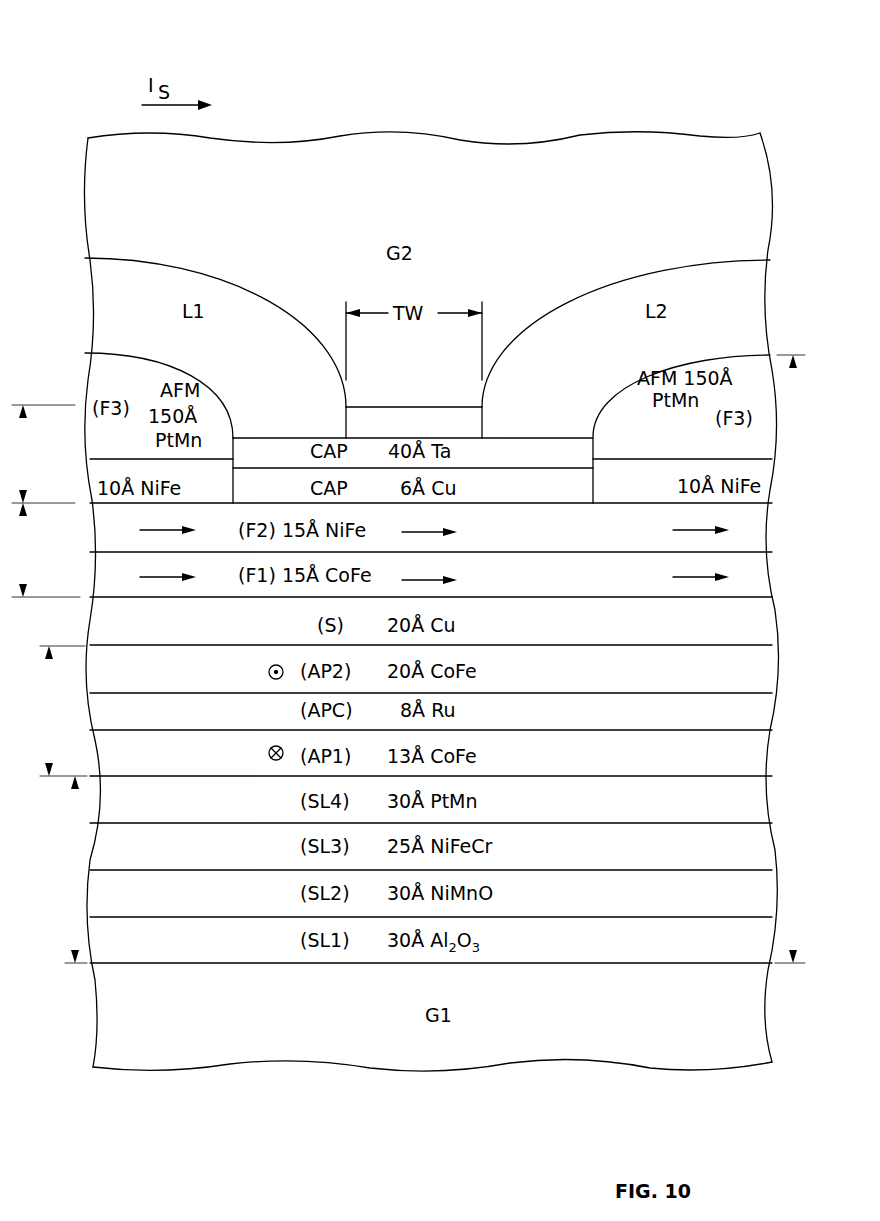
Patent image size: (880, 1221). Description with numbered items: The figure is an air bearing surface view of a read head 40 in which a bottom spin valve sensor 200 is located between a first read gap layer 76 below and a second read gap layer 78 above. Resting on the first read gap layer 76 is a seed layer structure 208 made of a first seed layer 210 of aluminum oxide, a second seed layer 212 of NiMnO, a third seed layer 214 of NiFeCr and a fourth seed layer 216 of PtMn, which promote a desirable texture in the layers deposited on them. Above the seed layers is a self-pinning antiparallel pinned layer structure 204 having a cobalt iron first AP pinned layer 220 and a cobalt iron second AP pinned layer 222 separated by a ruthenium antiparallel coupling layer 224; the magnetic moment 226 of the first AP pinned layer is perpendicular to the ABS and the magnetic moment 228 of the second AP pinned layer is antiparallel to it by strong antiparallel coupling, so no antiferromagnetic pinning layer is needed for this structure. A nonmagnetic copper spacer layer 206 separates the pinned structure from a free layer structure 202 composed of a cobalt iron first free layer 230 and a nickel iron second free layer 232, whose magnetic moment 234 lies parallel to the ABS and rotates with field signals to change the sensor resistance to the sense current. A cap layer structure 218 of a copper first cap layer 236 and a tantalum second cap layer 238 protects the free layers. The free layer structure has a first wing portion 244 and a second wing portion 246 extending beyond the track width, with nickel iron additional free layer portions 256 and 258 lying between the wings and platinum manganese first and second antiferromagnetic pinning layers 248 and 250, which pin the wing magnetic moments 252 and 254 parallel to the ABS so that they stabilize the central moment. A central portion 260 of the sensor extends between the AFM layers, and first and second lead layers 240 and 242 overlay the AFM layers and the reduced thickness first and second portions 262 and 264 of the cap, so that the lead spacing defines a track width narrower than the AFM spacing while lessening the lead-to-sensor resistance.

The read head 40 is at (516, 104).
The first read gap layer 76 is at (550, 1027).
The second read gap layer 78 is at (465, 265).
The spin valve sensor 200 is at (793, 963).
The free layer structure 202 is at (23, 405).
The antiparallel (AP) pinned layer structure 204 is at (49, 646).
The spacer layer 206 is at (560, 637).
The seed layer structure 208 is at (75, 776).
The first seed layer 210 is at (560, 950).
The second seed layer 212 is at (560, 905).
The third seed layer 214 is at (560, 858).
The fourth seed layer 216 is at (560, 811).
The cap layer structure 218 is at (23, 405).
The first AP pinned layer 220 is at (560, 768).
The second AP pinned layer 222 is at (560, 683).
The antiparallel coupling layer 224 is at (560, 722).
The magnetic moment of first AP pinned layer 226 is at (268, 753).
The magnetic moment of second AP pinned layer 228 is at (268, 672).
The first free layer 230 is at (560, 587).
The second free layer 232 is at (560, 542).
The magnetic moment of free layer structure 234 is at (420, 538).
The first cap layer 236 is at (560, 496).
The second cap layer 238 is at (560, 461).
The first lead layer 240 is at (139, 268).
The second lead layer 242 is at (717, 272).
The first wing portion 244 is at (208, 502).
The second wing portion 246 is at (620, 502).
The first antiferromagnetic pinning layer 248 is at (113, 380).
The second antiferromagnetic pinning layer 250 is at (750, 362).
The magnetic moment of first wing portion 252 is at (167, 530).
The magnetic moment of second wing portion 254 is at (693, 530).
The first additional free layer portion 256 is at (157, 467).
The second additional free layer portion 258 is at (663, 467).
The central portion 260 is at (400, 405).
The first portion of central portion 262 is at (310, 420).
The second portion of central portion 264 is at (505, 437).